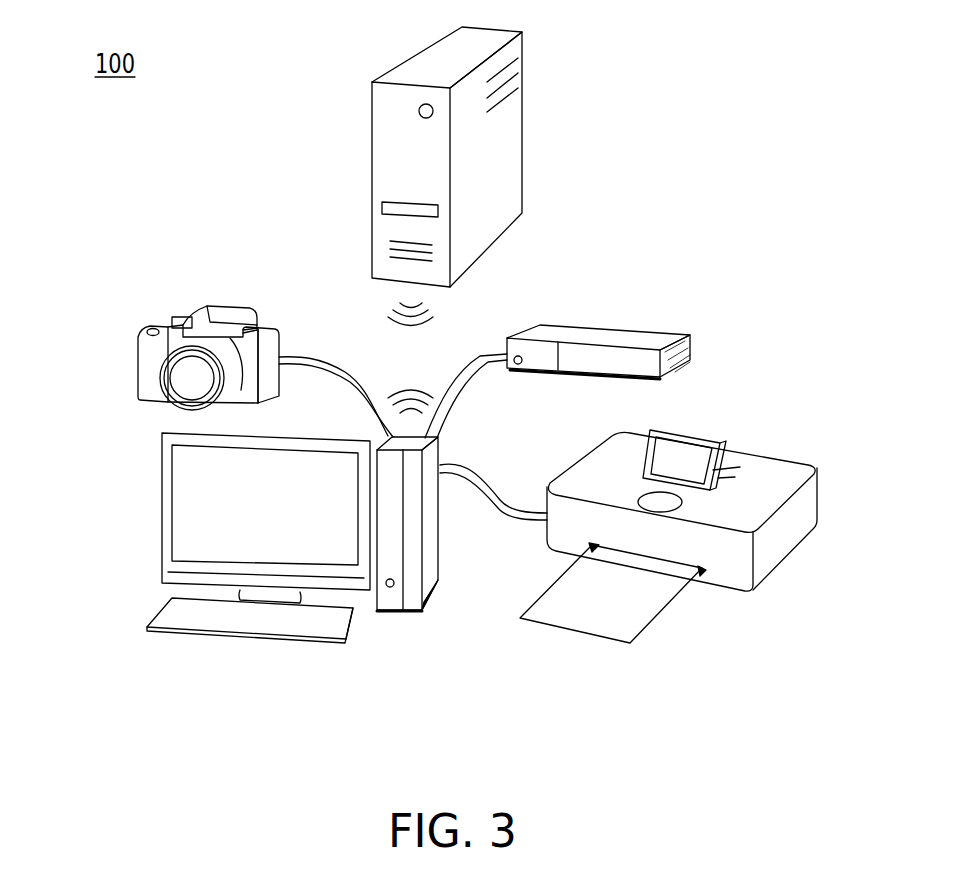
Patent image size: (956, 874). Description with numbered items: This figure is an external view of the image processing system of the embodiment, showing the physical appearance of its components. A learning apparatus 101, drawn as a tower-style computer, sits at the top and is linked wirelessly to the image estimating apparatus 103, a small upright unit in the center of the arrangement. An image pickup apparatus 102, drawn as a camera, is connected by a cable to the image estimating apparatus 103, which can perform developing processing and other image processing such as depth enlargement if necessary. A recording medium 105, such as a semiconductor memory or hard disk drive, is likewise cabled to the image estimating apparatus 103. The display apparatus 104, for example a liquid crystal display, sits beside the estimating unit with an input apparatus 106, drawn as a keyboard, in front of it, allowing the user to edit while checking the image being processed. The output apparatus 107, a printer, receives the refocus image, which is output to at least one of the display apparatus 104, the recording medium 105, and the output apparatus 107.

The learning apparatus 101 is at (373, 82).
The image pickup apparatus 102 is at (140, 332).
The image estimating apparatus 103 is at (412, 614).
The display apparatus 104 is at (162, 510).
The recording medium 105 is at (692, 337).
The input apparatus 106 is at (160, 610).
The output apparatus 107 is at (763, 462).